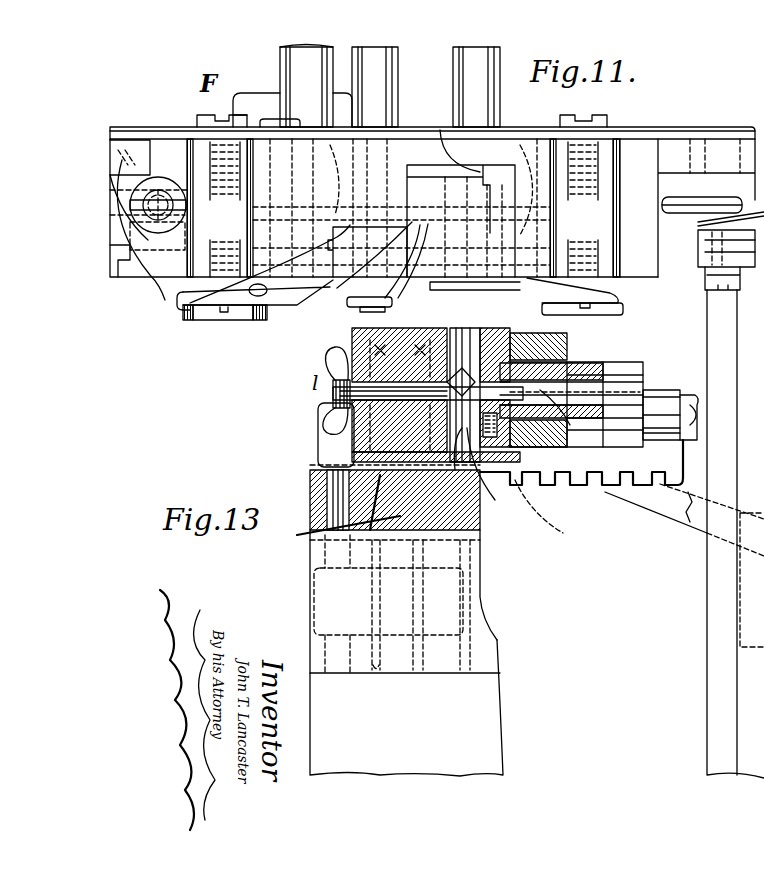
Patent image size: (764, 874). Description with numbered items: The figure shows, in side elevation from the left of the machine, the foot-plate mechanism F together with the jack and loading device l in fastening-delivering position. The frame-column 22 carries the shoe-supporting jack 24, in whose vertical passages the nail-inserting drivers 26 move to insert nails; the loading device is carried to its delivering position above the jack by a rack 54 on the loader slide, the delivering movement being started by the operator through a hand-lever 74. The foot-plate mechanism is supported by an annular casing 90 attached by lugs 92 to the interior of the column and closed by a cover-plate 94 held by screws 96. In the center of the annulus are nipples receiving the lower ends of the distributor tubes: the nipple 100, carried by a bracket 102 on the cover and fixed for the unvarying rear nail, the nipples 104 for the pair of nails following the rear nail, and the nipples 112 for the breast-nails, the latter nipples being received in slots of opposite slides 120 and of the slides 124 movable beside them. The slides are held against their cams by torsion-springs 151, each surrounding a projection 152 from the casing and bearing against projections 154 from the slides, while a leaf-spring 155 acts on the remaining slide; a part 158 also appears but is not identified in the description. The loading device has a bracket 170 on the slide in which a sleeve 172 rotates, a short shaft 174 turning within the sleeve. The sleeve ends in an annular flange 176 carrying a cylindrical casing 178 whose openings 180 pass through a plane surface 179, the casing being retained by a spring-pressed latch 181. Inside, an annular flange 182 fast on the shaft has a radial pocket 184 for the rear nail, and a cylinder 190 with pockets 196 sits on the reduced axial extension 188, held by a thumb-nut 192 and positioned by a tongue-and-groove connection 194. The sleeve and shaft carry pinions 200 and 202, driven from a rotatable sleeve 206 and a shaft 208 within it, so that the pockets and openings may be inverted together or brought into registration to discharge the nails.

In FIG. 13, the frame-column 22 is at (712, 730).
In FIG. 13, the shoe-supporting jack 24 is at (497, 711).
In FIG. 13, the nail-inserting drivers 26 is at (427, 653).
In FIG. 13, the rack 54 is at (632, 487).
In FIG. 13, the hand-lever 74 is at (697, 524).
In FIG. 11, the annular casing 90 is at (653, 273).
In FIG. 11, the lugs 92 is at (480, 172).
In FIG. 11, the cover-plate 94 is at (662, 132).
In FIG. 11, the screws 96 is at (198, 115).
In FIG. 11, the nipple 100 is at (282, 61).
In FIG. 11, the bracket 102 is at (238, 113).
In FIG. 11, the nipples 104 is at (394, 100).
In FIG. 11, the nipples 112 is at (498, 85).
In FIG. 11, the slides 120 is at (224, 309).
In FIG. 11, the slide 124 is at (330, 292).
In FIG. 11, the torsion-springs 151 is at (291, 304).
In FIG. 11, the projection 152 is at (237, 318).
In FIG. 13, the projection 152 is at (763, 343).
In FIG. 11, the projections 154 is at (645, 315).
In FIG. 11, the leaf-spring 155 is at (145, 250).
In FIG. 11, the pivot pin 158 is at (160, 200).
In FIG. 13, the bracket 170 is at (568, 352).
In FIG. 13, the sleeve 172 is at (578, 372).
In FIG. 13, the short shaft 174 is at (647, 389).
In FIG. 13, the annular flange 176 is at (502, 318).
In FIG. 13, the cylindrical casing 178 is at (393, 329).
In FIG. 13, the plane surface 179 is at (297, 535).
In FIG. 13, the openings 180 is at (353, 449).
In FIG. 13, the spring-pressed latch 181 is at (543, 470).
In FIG. 13, the annular flange 182 is at (460, 346).
In FIG. 13, the radial pocket 184 is at (490, 495).
In FIG. 13, the reduced axial extension 188 is at (326, 356).
In FIG. 13, the cylinder 190 is at (352, 441).
In FIG. 13, the thumb-nut 192 is at (332, 424).
In FIG. 13, the tongue-and-groove connection 194 is at (397, 604).
In FIG. 13, the pockets 196 is at (352, 346).
In FIG. 13, the pinion 200 is at (588, 447).
In FIG. 13, the pinion 202 is at (622, 443).
In FIG. 13, the sleeve 206 is at (670, 447).
In FIG. 13, the shaft 208 is at (700, 418).